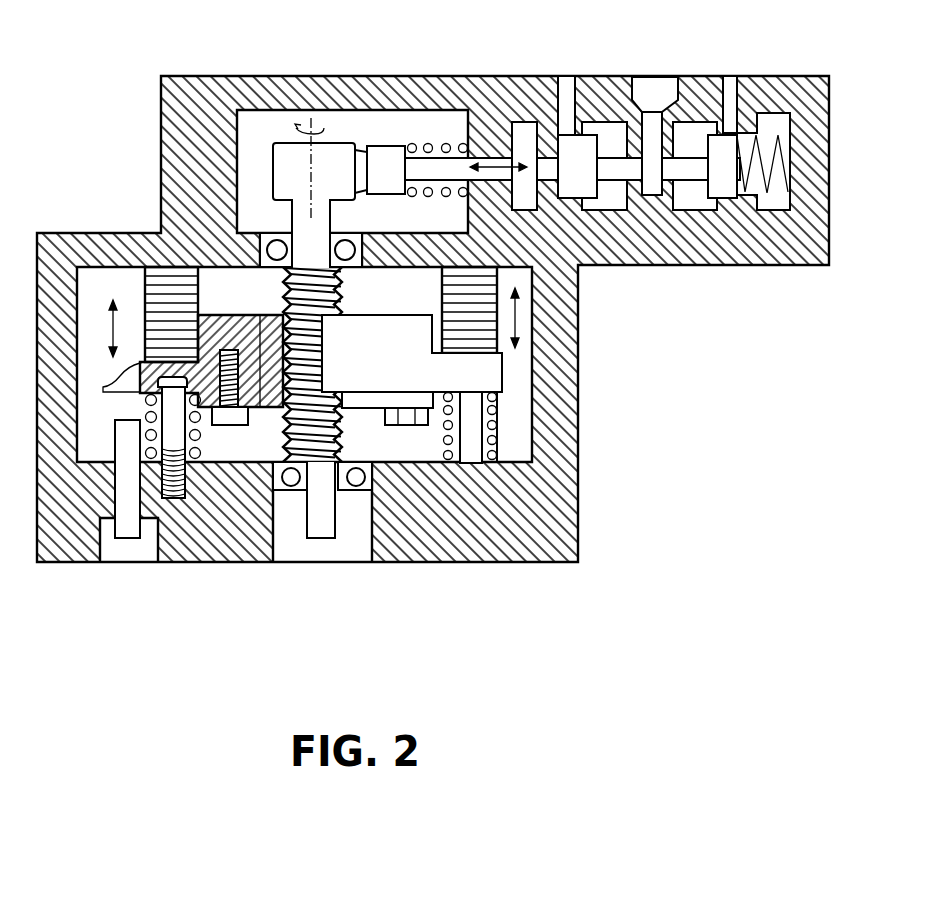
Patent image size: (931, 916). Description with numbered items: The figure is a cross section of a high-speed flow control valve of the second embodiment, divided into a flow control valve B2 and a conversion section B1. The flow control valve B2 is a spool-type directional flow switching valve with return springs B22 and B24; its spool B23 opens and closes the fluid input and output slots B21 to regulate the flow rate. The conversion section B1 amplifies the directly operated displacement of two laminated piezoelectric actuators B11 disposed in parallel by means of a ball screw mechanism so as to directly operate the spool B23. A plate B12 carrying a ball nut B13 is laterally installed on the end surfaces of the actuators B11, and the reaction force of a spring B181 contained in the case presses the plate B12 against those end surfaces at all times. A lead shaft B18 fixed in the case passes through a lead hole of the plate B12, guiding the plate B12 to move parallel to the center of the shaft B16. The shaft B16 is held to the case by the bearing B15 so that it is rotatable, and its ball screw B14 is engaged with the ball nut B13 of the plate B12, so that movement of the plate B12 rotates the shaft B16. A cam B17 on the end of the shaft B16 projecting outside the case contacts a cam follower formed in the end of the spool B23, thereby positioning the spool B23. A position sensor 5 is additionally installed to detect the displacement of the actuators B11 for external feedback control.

The conversion section B1 is at (578, 505).
The flow control valve B2 is at (616, 164).
The laminated piezoelectric actuators B11 is at (145, 300).
The plate B12 is at (395, 315).
The ball nut B13 is at (258, 416).
The ball screw B14 is at (287, 297).
The bearing B15 is at (364, 492).
The shaft B16 is at (317, 539).
The cam B17 is at (273, 173).
The lead shaft B18 is at (175, 494).
The spring B181 is at (140, 435).
The fluid input and output slots B21 is at (727, 78).
The return spring B22 is at (449, 146).
The spool B23 is at (728, 197).
The return spring B24 is at (775, 187).
The position sensor 5 is at (133, 539).